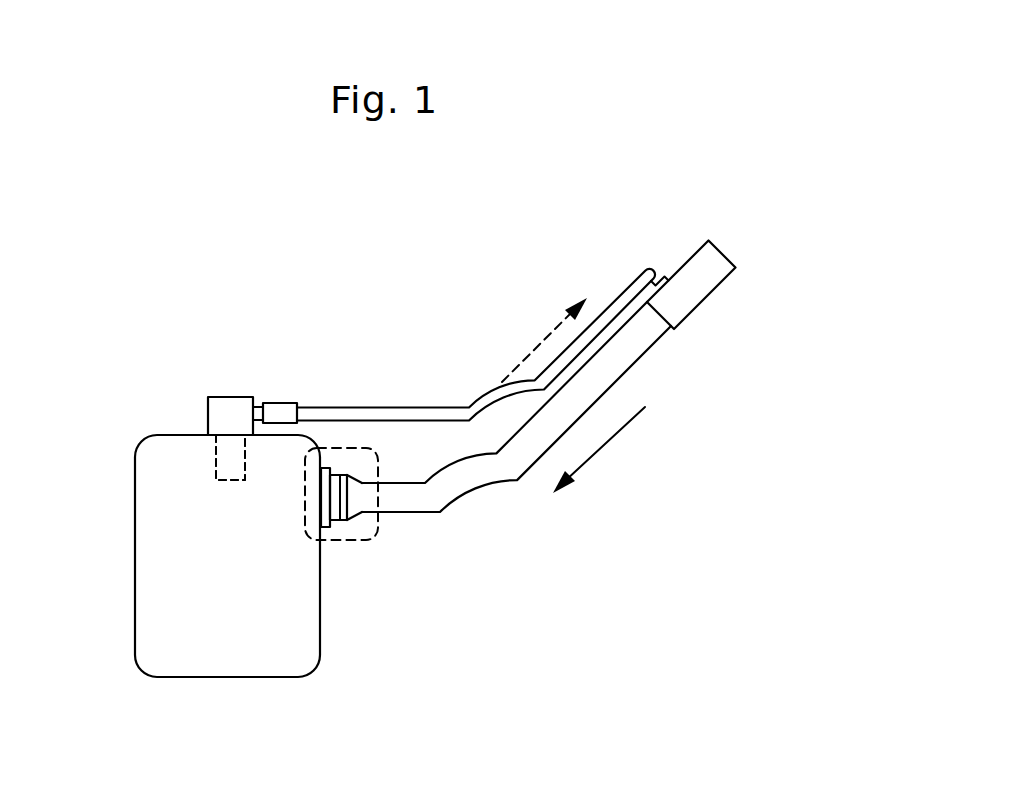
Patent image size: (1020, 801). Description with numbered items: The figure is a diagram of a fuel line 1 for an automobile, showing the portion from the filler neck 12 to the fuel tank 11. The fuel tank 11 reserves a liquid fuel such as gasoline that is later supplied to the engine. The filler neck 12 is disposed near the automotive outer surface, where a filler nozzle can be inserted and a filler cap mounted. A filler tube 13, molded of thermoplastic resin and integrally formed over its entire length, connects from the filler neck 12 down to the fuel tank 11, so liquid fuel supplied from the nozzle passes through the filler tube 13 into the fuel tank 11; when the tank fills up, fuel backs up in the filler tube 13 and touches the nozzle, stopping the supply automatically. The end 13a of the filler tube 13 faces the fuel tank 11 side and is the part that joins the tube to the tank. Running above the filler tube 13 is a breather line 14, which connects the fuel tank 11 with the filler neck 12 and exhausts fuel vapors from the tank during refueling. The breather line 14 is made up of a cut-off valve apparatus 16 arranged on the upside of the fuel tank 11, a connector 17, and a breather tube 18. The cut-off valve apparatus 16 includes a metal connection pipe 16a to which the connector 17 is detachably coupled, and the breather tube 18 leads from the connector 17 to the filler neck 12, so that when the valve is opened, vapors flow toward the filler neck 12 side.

The fuel line 1 is at (247, 265).
The fuel tank 11 is at (134, 517).
The filler neck 12 is at (720, 288).
The filler tube 13 is at (455, 510).
The end of the filler tube 13a is at (360, 542).
The breather line 14 is at (411, 402).
The cut-off valve apparatus 16 is at (207, 414).
The connection pipe 16a is at (243, 396).
The connector 17 is at (281, 402).
The breather tube 18 is at (477, 404).